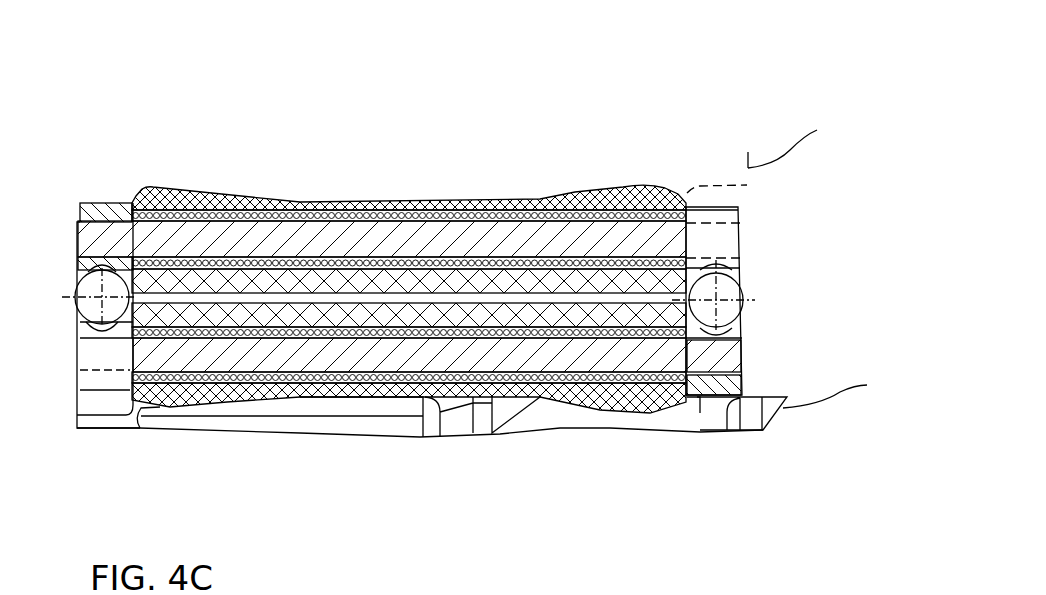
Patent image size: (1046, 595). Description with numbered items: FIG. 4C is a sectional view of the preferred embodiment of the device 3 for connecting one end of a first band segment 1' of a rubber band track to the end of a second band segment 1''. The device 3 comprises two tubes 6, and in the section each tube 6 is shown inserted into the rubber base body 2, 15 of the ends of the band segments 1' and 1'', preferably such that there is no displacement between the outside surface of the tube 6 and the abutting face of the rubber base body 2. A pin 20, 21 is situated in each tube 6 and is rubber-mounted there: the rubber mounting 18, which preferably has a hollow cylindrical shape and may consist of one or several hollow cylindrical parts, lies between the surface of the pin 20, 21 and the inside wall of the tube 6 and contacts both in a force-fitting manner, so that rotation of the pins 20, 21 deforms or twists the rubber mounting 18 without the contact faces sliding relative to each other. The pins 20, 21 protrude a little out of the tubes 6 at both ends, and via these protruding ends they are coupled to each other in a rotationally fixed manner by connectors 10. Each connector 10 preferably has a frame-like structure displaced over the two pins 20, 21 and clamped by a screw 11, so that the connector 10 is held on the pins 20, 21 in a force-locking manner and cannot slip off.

The device 3 is at (389, 137).
The rubber base body 2 is at (186, 278).
The rubber mounting 18 is at (280, 265).
The pin 20 is at (447, 242).
The pin 21 is at (418, 360).
The tube 6 is at (350, 268).
The connector 10 is at (105, 203).
The screw 11 is at (83, 300).
The rubber base body 15 is at (592, 413).
The first band segment 1' is at (767, 150).
The second band segment 1'' is at (838, 388).